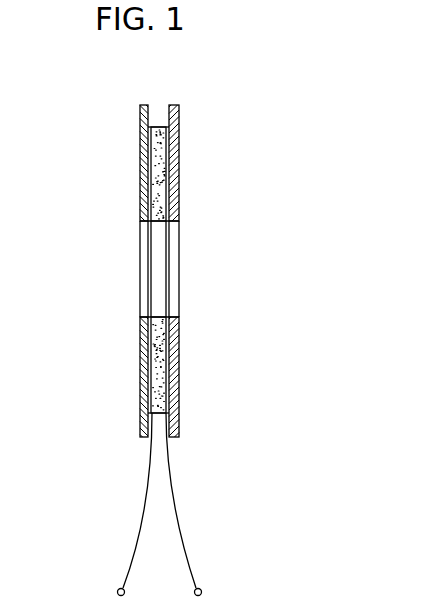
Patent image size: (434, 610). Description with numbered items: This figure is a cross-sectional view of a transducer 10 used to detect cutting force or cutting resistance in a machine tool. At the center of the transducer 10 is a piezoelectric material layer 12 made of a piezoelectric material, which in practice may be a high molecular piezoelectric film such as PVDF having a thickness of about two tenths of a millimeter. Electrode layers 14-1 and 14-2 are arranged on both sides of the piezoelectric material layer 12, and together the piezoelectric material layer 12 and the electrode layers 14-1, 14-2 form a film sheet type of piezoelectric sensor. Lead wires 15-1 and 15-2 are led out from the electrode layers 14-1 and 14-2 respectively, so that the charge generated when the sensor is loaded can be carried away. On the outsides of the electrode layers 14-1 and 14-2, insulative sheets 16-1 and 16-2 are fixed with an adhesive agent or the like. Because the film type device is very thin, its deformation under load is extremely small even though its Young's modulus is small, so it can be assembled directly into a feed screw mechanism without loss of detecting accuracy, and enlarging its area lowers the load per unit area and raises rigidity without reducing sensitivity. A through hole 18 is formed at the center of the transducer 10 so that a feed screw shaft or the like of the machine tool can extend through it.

The transducer 10 is at (127, 138).
The piezoelectric material layer 12 is at (155, 197).
The electrode layer 14-1 is at (178, 396).
The electrode layer 14-2 is at (150, 384).
The lead wire 15-1 is at (190, 567).
The lead wire 15-2 is at (135, 556).
The insulative sheet 16-1 is at (178, 110).
The insulative sheet 16-2 is at (140, 108).
The through hole 18 is at (143, 246).